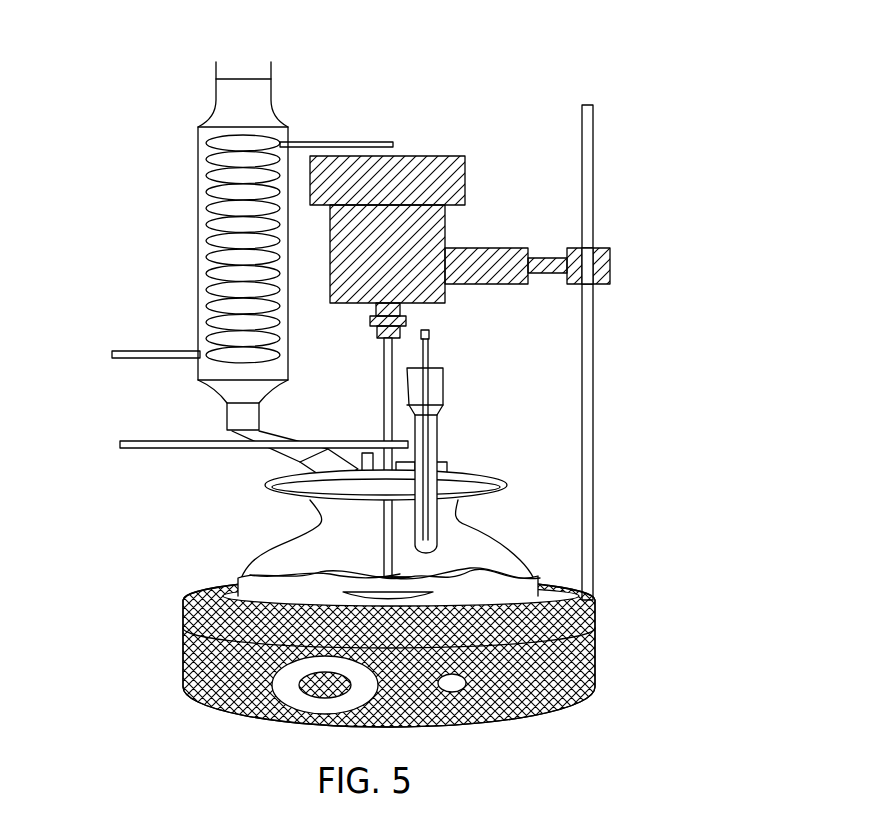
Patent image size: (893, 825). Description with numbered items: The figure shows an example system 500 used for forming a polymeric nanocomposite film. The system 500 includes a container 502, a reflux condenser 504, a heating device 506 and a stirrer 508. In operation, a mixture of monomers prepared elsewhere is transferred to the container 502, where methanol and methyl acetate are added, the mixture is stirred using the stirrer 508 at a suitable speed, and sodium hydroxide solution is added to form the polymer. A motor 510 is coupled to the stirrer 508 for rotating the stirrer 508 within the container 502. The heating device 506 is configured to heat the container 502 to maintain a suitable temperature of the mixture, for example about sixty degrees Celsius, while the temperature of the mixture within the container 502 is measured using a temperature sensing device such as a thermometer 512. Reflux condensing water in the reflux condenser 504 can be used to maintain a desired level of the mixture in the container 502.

The system 500 is at (677, 115).
The container 502 is at (270, 545).
The reflux condenser 504 is at (198, 222).
The heating device 506 is at (184, 661).
The stirrer 508 is at (537, 593).
The motor 510 is at (447, 210).
The thermometer 512 is at (440, 437).